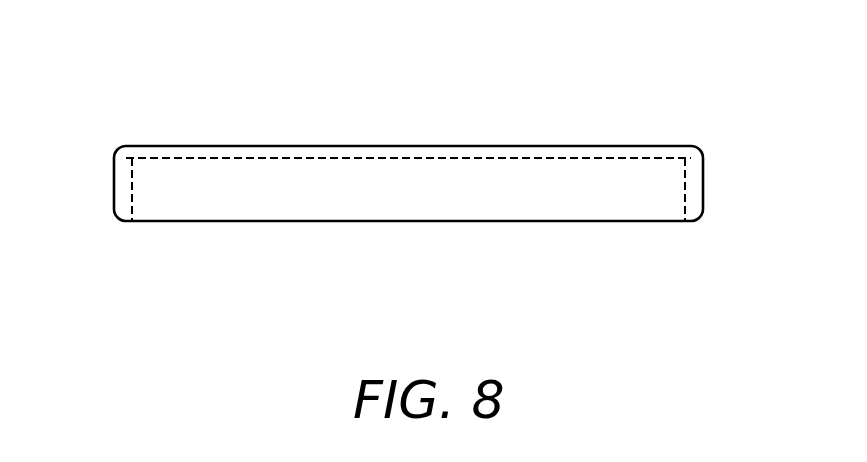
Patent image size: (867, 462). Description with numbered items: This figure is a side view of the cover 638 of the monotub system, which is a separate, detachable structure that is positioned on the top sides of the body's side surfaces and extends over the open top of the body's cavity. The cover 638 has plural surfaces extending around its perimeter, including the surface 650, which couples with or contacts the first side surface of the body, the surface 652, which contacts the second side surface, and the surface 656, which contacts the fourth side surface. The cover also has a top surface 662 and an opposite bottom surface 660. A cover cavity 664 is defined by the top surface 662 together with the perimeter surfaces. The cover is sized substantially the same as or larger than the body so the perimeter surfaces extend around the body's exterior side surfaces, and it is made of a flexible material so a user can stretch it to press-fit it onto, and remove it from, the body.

The cover 638 is at (551, 75).
The surface 650 is at (112, 183).
The surface 652 is at (706, 153).
The surface 656 is at (583, 206).
The bottom surface 660 is at (249, 233).
The top surface 662 is at (409, 134).
The cover cavity 664 is at (405, 206).